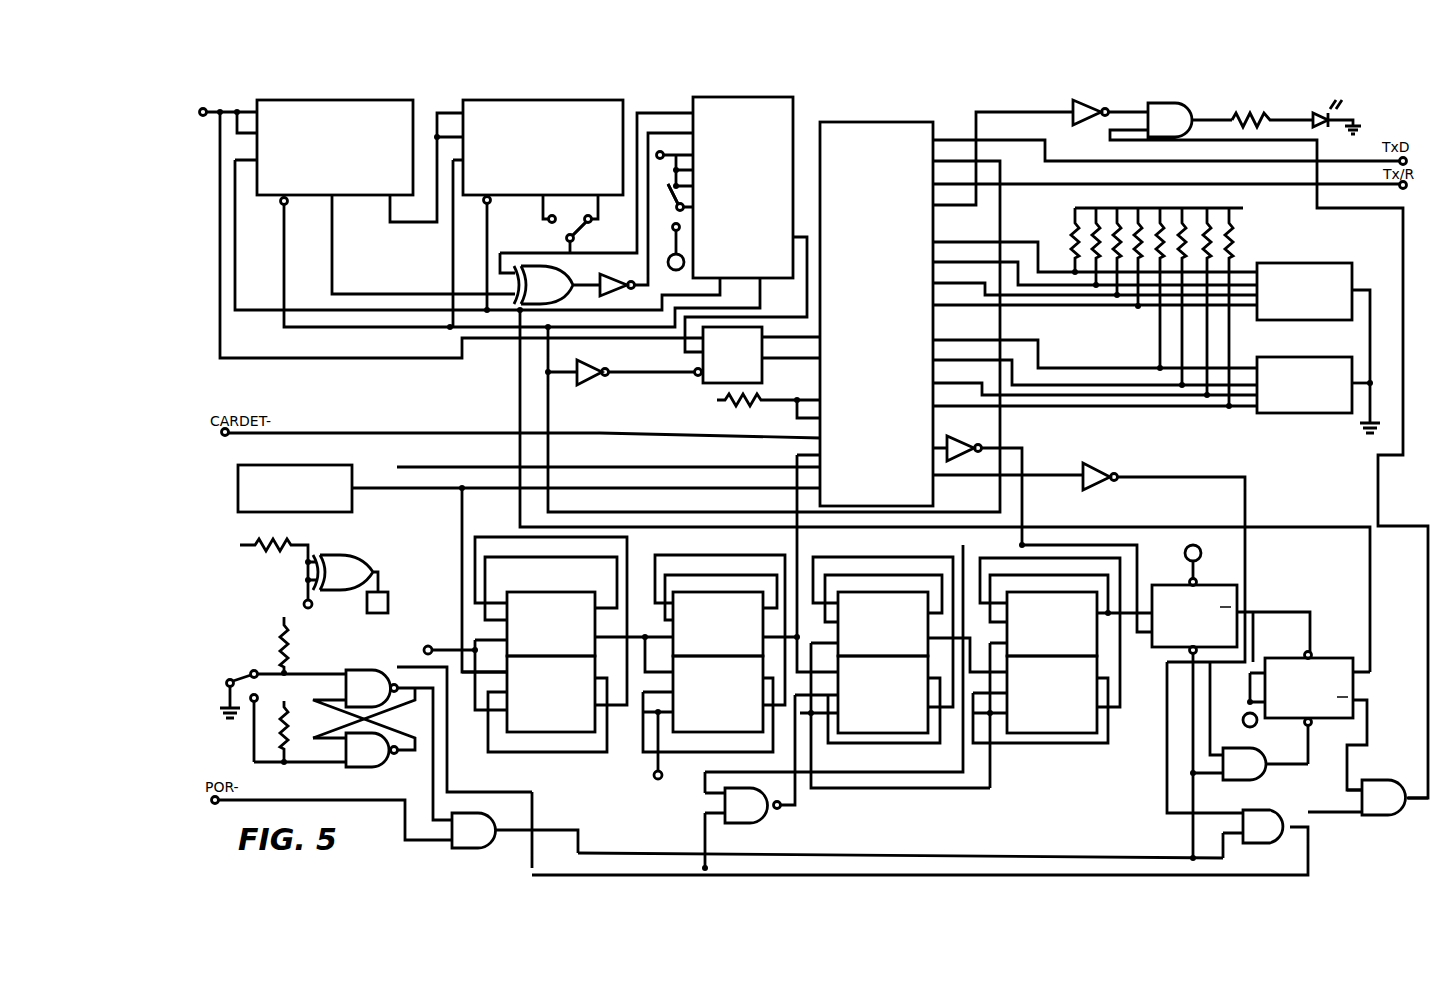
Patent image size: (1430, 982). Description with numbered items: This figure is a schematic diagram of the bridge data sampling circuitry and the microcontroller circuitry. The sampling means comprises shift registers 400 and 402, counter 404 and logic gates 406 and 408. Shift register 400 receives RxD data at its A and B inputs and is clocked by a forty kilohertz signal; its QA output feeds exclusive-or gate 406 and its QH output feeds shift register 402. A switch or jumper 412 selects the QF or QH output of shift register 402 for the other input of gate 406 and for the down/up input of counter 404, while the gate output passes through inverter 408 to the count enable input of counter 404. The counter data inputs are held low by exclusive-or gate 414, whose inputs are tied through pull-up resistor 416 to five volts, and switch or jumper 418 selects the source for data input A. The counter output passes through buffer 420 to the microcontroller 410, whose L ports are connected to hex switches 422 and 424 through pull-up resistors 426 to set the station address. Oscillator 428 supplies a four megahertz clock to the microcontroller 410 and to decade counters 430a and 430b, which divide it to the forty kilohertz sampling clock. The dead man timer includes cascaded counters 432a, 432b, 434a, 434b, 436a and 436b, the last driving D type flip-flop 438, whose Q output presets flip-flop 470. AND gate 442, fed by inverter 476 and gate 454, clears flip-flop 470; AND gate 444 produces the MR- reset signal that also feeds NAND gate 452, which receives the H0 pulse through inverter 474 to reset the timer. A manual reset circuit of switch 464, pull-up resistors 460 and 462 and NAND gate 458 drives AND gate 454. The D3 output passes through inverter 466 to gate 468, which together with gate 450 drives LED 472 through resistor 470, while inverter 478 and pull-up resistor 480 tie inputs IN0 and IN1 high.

The shift register 400 is at (366, 196).
The shift register 402 is at (526, 194).
The counter 404 is at (796, 110).
The exclusive-or gate 406 is at (562, 258).
The inverter 408 is at (646, 214).
The microcontroller 410 is at (912, 122).
The switch or jumper 412 is at (566, 236).
The exclusive-or gate 414 is at (344, 556).
The pull-up resistor 416 is at (288, 545).
The switch or jumper 418 is at (672, 204).
The buffer 420 is at (763, 378).
The hex switch 422 is at (1336, 263).
The hex switch 424 is at (1306, 357).
The pull-up resistors 426 is at (1060, 229).
The oscillator 428 is at (316, 465).
The dual 4-bit decade counter half 430a is at (566, 736).
The dual 4-bit decade counter half 430b is at (541, 592).
The counter 432a is at (742, 736).
The counter 432b is at (694, 592).
The counter 434a is at (910, 740).
The counter 434b is at (918, 592).
The counter 436a is at (1086, 740).
The counter 436b is at (1034, 592).
The D type flip-flop 438 is at (1224, 586).
The AND gate 442 is at (1236, 748).
The AND gate 444 is at (1284, 810).
The AND gate 450 is at (1402, 784).
The NAND gate 452 is at (770, 822).
The AND gate 454 is at (484, 818).
The NAND gate 458 is at (382, 668).
The pull-up resistor 460 is at (290, 714).
The pull-up resistor 462 is at (298, 632).
The switch 464 is at (242, 668).
The inverter 466 is at (1068, 118).
The gate 468 is at (1200, 102).
The D type flip-flop / resistor 470 is at (1258, 118).
The LED 472 is at (1310, 128).
The inverter 474 is at (978, 434).
The inverter 476 is at (1104, 466).
The inverter 478 is at (594, 360).
The pull-up resistor 480 is at (758, 408).